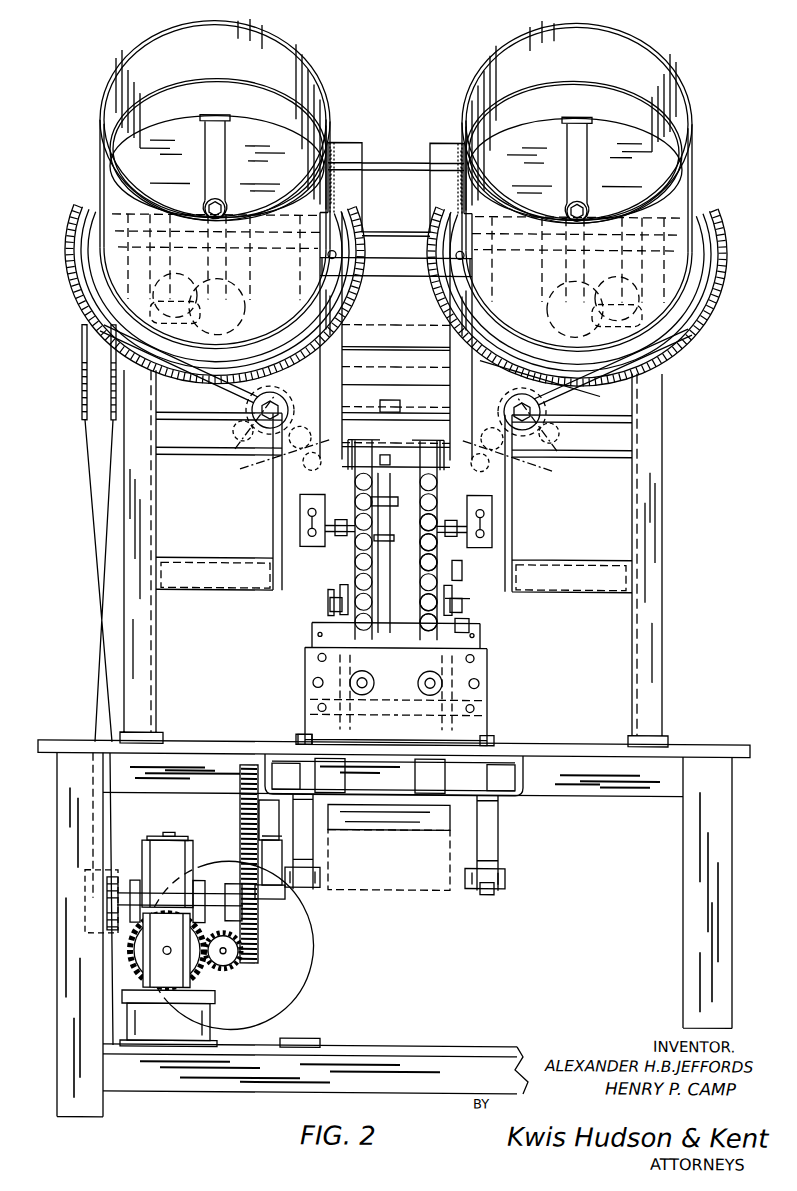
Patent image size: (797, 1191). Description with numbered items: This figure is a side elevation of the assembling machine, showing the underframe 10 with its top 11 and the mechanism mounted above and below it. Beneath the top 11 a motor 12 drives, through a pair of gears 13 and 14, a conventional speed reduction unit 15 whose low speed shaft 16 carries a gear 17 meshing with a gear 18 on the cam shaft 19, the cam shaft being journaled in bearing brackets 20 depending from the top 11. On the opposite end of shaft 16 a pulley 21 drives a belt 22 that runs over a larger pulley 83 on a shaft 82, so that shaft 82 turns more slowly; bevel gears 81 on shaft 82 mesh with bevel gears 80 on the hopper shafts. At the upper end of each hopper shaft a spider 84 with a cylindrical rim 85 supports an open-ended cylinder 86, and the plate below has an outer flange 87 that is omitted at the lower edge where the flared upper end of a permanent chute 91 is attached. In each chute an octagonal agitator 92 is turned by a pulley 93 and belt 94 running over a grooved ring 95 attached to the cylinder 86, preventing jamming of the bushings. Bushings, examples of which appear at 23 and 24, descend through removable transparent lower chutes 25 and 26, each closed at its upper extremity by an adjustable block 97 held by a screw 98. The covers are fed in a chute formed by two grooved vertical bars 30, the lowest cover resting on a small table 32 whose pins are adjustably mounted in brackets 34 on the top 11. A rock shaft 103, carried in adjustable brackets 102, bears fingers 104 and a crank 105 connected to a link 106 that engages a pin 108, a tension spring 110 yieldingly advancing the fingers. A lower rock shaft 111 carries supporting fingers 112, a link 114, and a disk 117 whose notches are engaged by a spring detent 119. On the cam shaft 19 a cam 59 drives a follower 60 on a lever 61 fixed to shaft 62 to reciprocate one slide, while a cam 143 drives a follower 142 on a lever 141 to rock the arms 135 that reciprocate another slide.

The underframe 10 is at (62, 812).
The top 11 is at (676, 743).
The motor 12 is at (312, 953).
The gear 13 is at (244, 970).
The gear 14 is at (138, 960).
The speed reduction unit 15 is at (160, 842).
The low speed shaft 16 is at (218, 880).
The gear 17 is at (290, 921).
The gear 18 is at (240, 807).
The cam shaft 19 is at (414, 830).
The bearing brackets 20 is at (337, 820).
The pulley 21 is at (100, 884).
The belt 22 is at (96, 700).
The bushing 23 is at (290, 458).
The bushing 24 is at (508, 458).
The chute 25 is at (330, 602).
The chute 26 is at (472, 628).
The vertical bars 30 is at (345, 292).
The table 32 is at (482, 718).
The brackets 34 is at (375, 892).
The cam 59 is at (500, 876).
The cam follower 60 is at (488, 892).
The lever 61 is at (500, 856).
The shaft 62 is at (520, 792).
The bevel gears 80 is at (396, 300).
The bevel gears 81 is at (396, 295).
The shaft 82 is at (540, 372).
The pulley 83 is at (82, 413).
The spider 84 is at (235, 206).
The cylindrical rim 85 is at (240, 71).
The cylinder 86 is at (130, 61).
The flange 87 is at (70, 243).
The chute 91 is at (392, 365).
The agitator 92 is at (242, 455).
The pulley 93 is at (270, 392).
The belt 94 is at (205, 400).
The grooved ring 95 is at (222, 358).
The block 97 is at (360, 462).
The screw 98 is at (378, 462).
The adjustable brackets 102 is at (300, 506).
The rock shaft 103 is at (413, 544).
The fingers 104 is at (338, 549).
The crank 105 is at (413, 567).
The link 106 is at (413, 521).
The pin 108 is at (392, 457).
The tension spring 110 is at (394, 553).
The rock shaft 111 is at (413, 605).
The fingers 112 is at (335, 619).
The link 114 is at (413, 626).
The disk 117 is at (472, 598).
The spring detent 119 is at (465, 575).
The arms 135 is at (314, 726).
The lever 141 is at (295, 857).
The cam follower 142 is at (312, 890).
The cam 143 is at (313, 856).